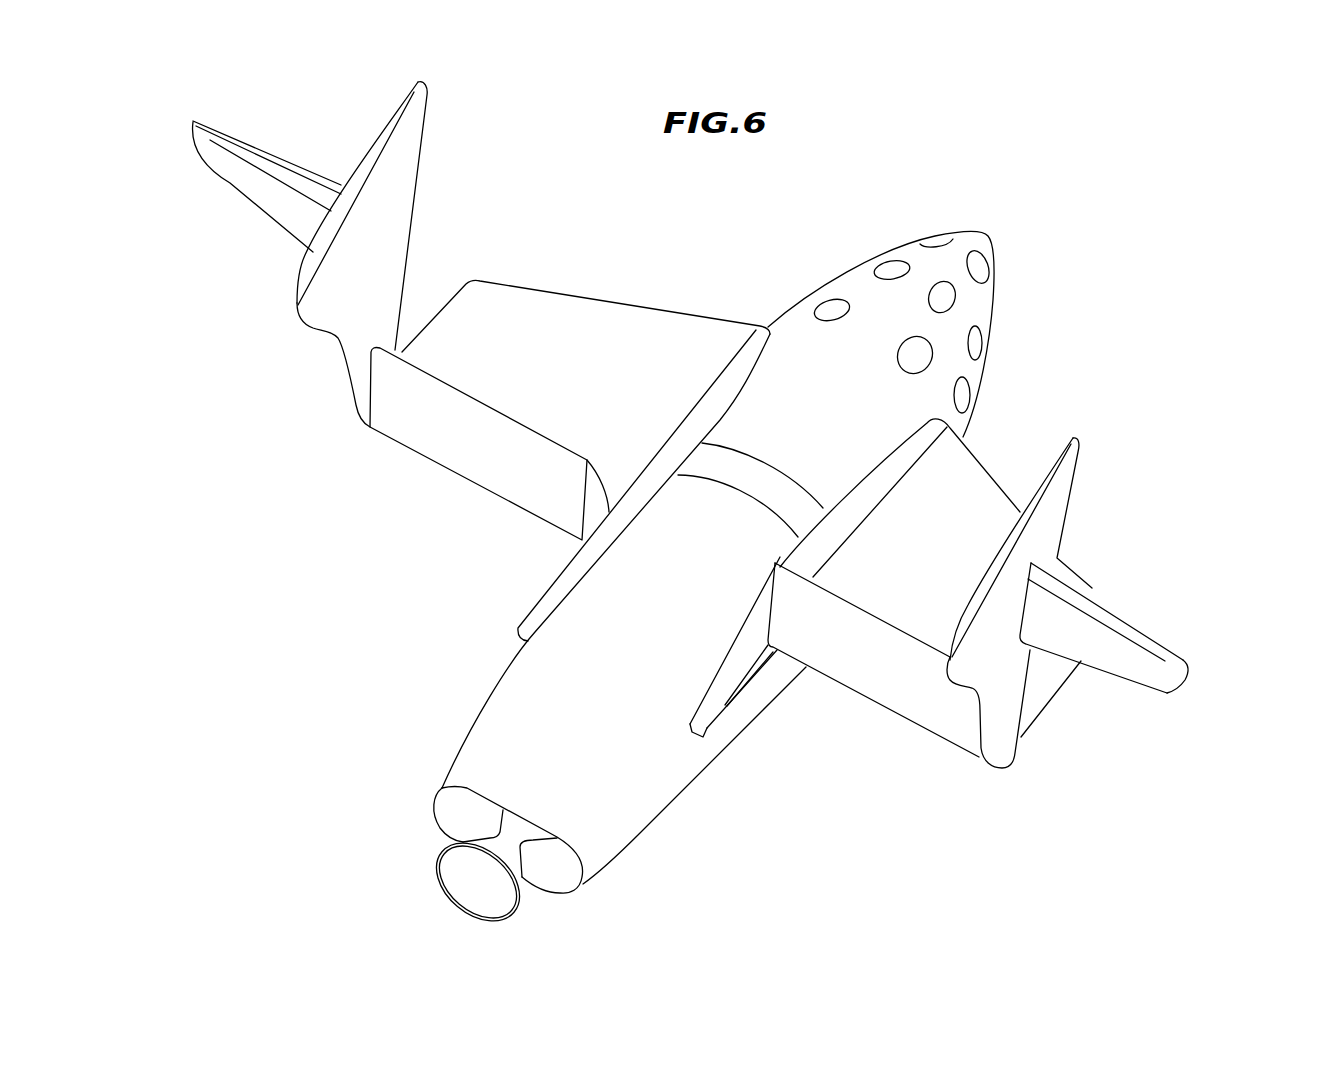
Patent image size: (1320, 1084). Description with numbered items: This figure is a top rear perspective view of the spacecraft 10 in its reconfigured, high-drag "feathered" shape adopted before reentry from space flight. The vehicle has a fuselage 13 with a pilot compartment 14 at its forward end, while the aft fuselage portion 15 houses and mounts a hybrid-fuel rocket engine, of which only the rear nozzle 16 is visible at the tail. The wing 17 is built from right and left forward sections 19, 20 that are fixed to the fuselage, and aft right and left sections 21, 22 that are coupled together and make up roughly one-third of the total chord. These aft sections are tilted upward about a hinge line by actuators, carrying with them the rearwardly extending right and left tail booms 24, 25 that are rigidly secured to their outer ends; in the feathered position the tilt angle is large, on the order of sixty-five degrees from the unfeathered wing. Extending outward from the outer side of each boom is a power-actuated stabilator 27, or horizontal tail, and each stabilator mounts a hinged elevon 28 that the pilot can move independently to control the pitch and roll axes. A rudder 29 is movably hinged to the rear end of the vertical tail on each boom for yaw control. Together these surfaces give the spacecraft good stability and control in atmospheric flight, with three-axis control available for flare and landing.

The aircraft assembly 10 is at (1043, 298).
The fuselage 13 is at (986, 388).
The pilot compartment 14 is at (953, 262).
The aft fuselage portion 15 is at (622, 685).
The rear nozzle 16 is at (445, 892).
The wing 17 is at (633, 296).
The right forward wing section 19 is at (932, 561).
The left forward wing section 20 is at (599, 369).
The aft right wing section 21 is at (905, 672).
The aft left wing section 22 is at (497, 450).
The right tail boom 24 is at (998, 711).
The left tail boom 25 is at (373, 272).
The stabilator 27 is at (271, 194).
The elevon 28 is at (270, 167).
The rudder 29 is at (397, 135).